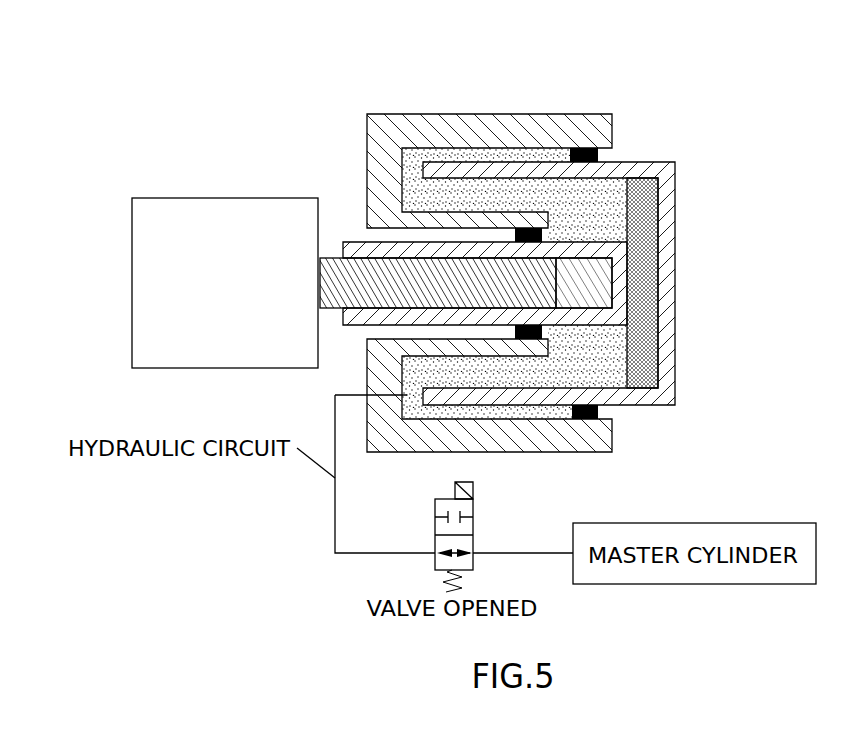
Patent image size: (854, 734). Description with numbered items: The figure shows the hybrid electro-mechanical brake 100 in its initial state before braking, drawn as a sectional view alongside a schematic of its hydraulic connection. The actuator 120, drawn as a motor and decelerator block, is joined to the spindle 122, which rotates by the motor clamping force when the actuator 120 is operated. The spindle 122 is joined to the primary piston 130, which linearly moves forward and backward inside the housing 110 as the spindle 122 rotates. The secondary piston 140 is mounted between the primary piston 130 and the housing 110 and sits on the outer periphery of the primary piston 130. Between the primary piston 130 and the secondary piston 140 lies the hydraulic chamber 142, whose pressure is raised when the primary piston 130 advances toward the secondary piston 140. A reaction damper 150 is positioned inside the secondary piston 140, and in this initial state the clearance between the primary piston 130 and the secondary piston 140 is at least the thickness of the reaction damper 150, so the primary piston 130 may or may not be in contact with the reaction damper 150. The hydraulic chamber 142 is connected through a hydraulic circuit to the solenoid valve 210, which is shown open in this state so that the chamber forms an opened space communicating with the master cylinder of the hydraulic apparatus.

The hybrid electro-mechanical brake (EMB) 100 is at (505, 248).
The housing 110 is at (443, 113).
The actuator 120 is at (132, 278).
The spindle 122 is at (331, 262).
The primary piston 130 is at (588, 243).
The secondary piston 140 is at (676, 212).
The hydraulic chamber 142 is at (610, 373).
The reaction damper 150 is at (652, 293).
The solenoid valve 210 is at (474, 510).